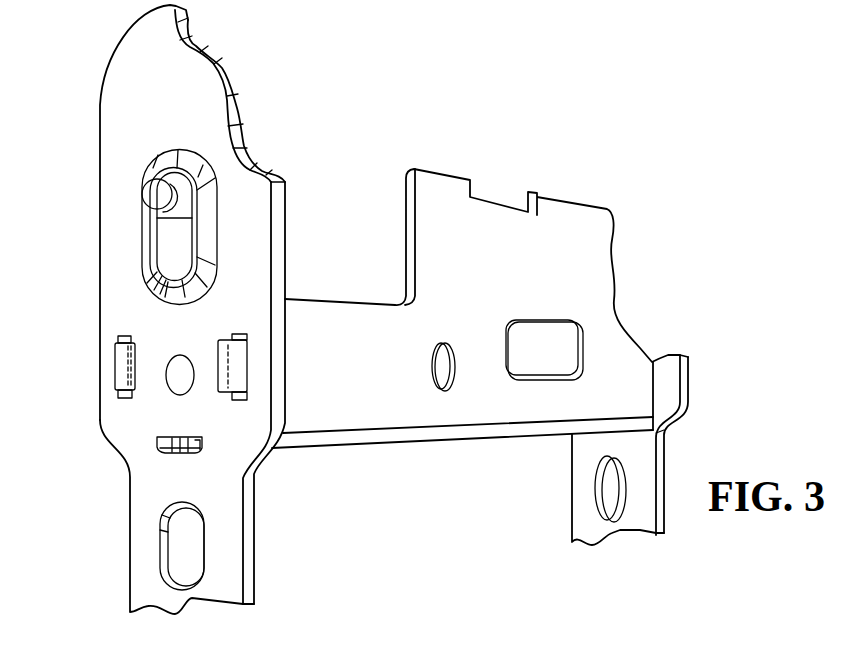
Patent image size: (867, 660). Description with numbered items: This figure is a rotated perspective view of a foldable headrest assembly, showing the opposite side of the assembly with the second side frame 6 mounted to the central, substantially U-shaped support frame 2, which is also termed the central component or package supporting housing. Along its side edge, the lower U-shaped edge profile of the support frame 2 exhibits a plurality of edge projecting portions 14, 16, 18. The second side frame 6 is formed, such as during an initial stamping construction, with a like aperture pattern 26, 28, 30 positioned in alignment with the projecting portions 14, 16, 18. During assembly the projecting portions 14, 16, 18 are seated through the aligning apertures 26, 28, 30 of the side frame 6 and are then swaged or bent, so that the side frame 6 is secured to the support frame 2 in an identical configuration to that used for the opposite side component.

The support frame 2 is at (388, 376).
The second side frame 6 is at (108, 247).
The projecting portion 14 is at (118, 370).
The projecting portion 16 is at (228, 353).
The projecting portion 18 is at (172, 452).
The aperture 26 is at (122, 400).
The aperture 28 is at (247, 394).
The aperture 30 is at (198, 454).